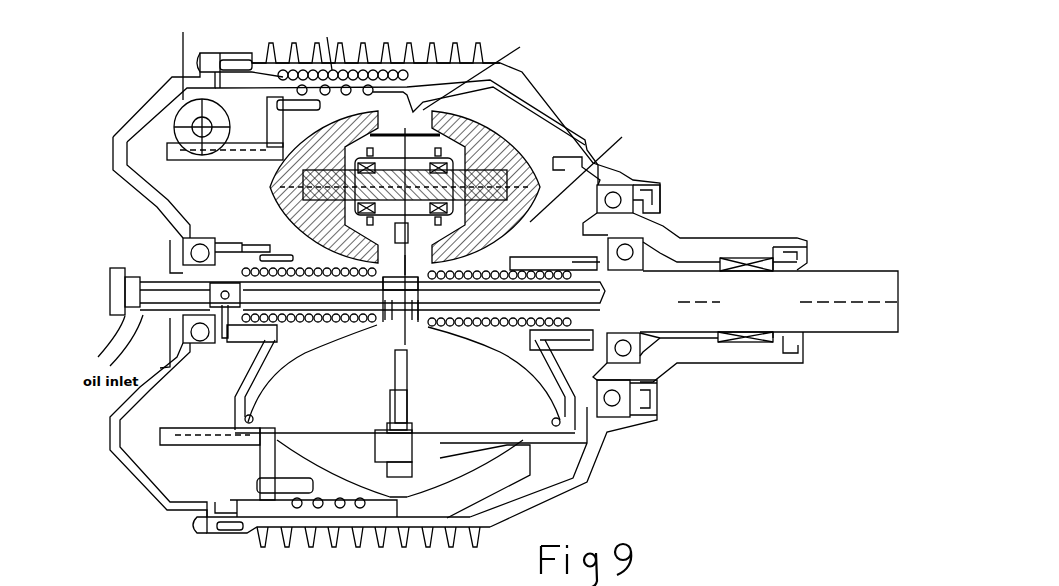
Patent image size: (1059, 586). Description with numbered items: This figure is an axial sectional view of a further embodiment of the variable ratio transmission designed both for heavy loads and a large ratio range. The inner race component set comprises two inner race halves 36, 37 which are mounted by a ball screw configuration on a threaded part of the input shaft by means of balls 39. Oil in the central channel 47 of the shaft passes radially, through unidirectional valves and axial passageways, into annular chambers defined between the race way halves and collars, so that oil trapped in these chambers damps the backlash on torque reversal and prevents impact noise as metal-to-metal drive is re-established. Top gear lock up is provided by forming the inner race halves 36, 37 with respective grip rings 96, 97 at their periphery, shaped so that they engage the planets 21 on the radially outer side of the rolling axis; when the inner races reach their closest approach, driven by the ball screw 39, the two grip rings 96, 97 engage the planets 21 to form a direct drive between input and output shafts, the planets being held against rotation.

The planets 21 is at (500, 130).
The inner race half 36 is at (303, 347).
The inner race half 37 is at (516, 385).
The balls 39 is at (477, 325).
The central channel 47 is at (170, 277).
The grip ring 96 is at (250, 160).
The grip ring 97 is at (553, 177).